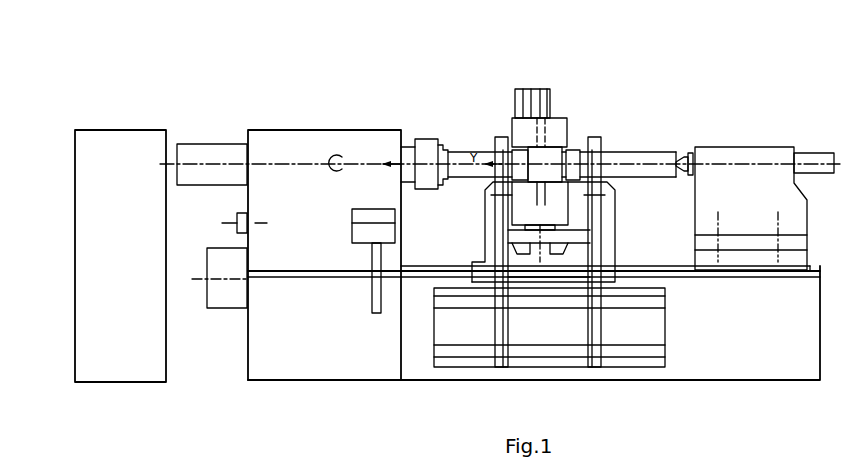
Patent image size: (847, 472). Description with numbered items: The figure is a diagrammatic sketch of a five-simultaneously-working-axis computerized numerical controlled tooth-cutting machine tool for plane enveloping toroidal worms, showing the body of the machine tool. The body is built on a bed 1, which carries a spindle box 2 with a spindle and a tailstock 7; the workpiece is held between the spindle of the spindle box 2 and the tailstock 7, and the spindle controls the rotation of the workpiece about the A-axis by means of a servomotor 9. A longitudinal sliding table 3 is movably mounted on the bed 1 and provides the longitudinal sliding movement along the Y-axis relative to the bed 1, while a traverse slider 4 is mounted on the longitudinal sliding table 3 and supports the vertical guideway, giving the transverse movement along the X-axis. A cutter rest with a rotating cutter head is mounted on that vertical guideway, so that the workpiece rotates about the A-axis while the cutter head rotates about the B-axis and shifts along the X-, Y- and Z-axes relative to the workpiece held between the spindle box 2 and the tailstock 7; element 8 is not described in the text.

The bed 1 is at (342, 308).
The spindle box 2 is at (388, 145).
The longitudinal sliding table 3 is at (480, 268).
The traverse slider 4 is at (846, 58).
The tailstock 7 is at (737, 203).
The measuring sensor and computer 8 is at (132, 322).
The servomotor 9 is at (234, 153).